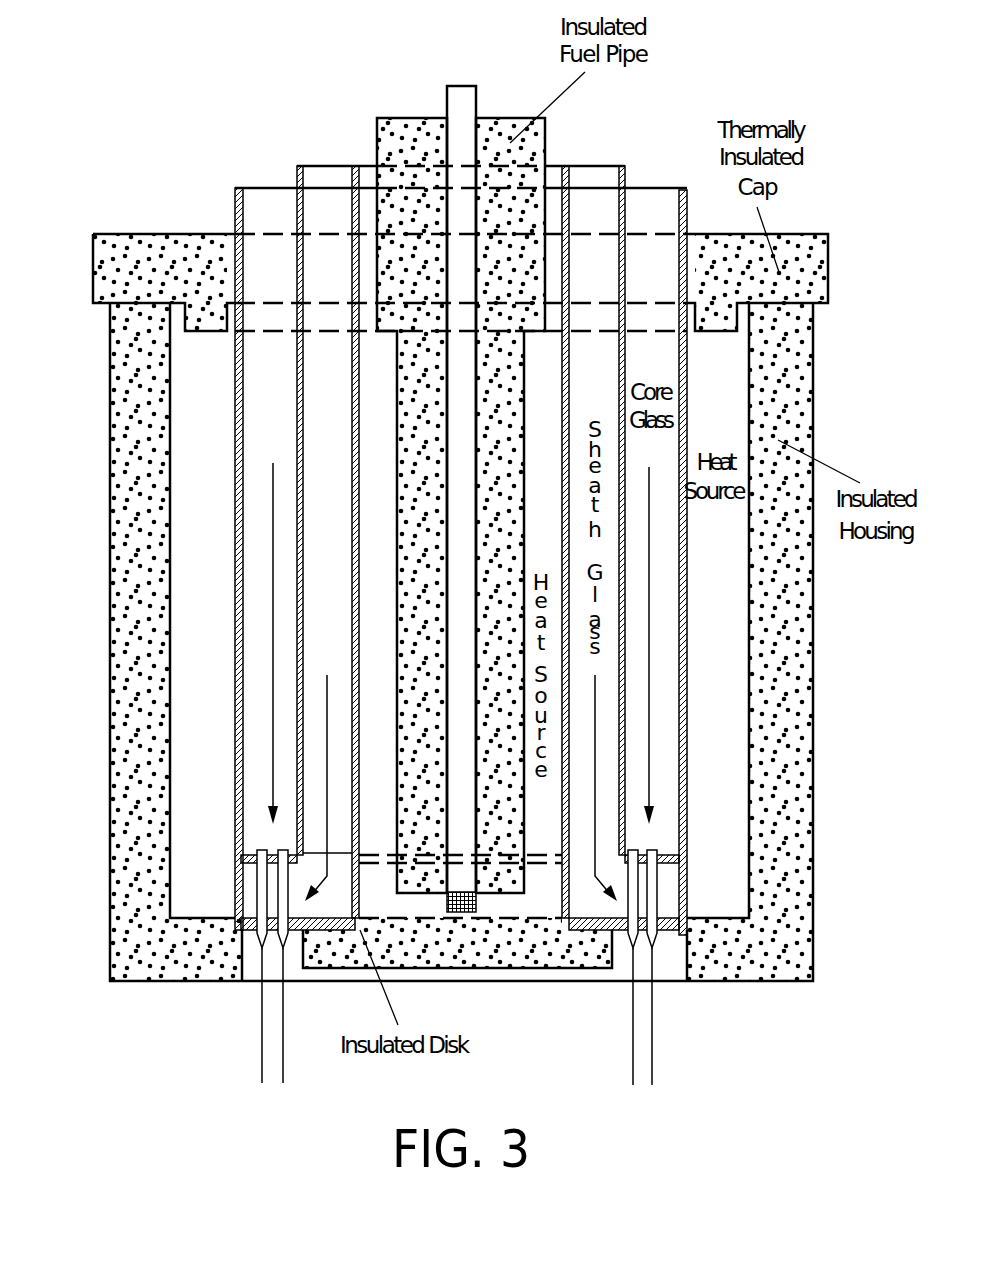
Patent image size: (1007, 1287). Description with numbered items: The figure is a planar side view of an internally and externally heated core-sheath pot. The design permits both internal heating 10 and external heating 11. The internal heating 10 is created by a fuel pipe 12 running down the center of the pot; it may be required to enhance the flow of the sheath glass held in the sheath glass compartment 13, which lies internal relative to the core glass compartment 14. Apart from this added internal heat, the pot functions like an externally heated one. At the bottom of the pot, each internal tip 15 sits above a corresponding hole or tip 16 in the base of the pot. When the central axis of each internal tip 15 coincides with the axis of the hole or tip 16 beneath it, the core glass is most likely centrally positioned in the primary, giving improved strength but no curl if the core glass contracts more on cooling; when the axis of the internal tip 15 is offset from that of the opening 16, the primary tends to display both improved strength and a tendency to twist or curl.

The internal heating 10 is at (376, 642).
The external heating 11 is at (204, 604).
The fuel pipe 12 is at (465, 103).
The sheath glass compartment 13 is at (332, 542).
The core glass compartment 14 is at (269, 548).
The internal tip 15 is at (253, 884).
The hole or tip in base of pot 16 is at (258, 943).